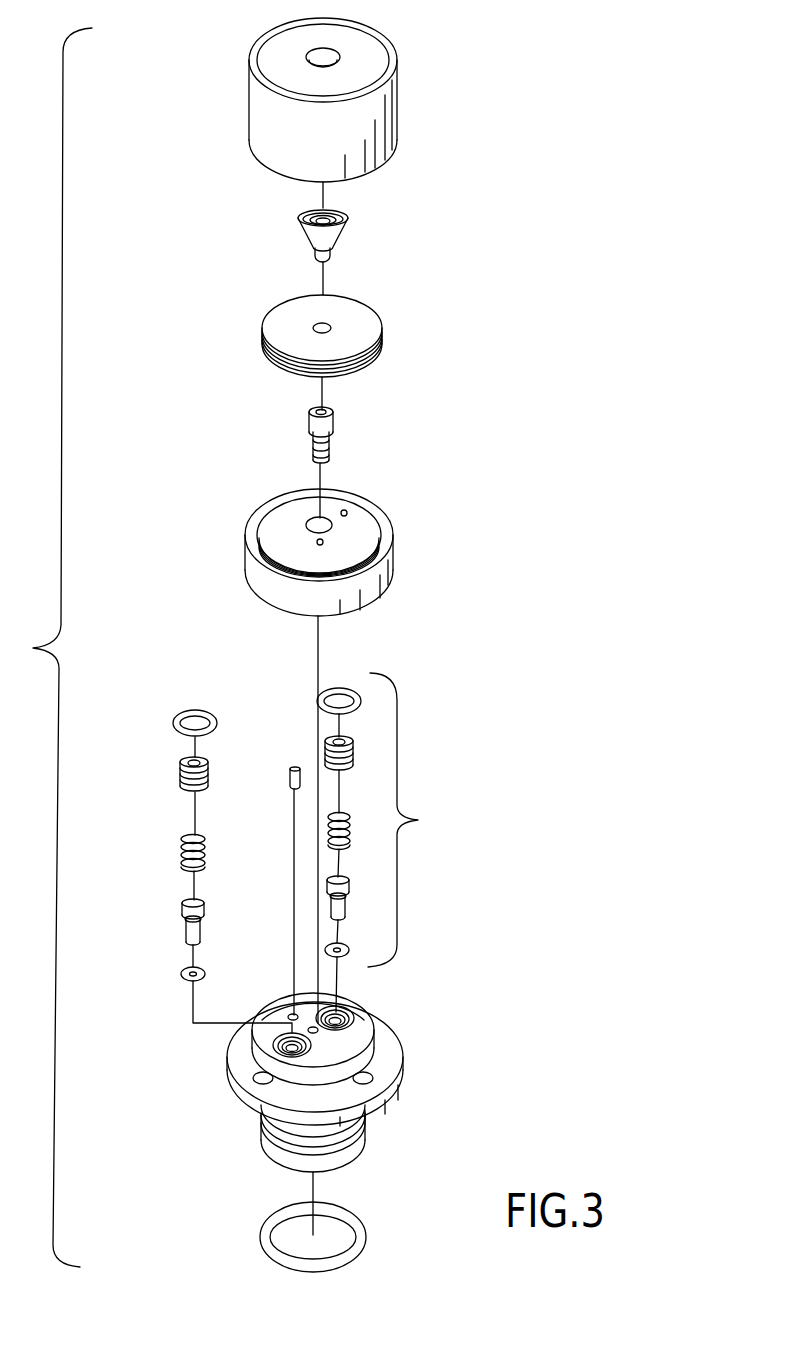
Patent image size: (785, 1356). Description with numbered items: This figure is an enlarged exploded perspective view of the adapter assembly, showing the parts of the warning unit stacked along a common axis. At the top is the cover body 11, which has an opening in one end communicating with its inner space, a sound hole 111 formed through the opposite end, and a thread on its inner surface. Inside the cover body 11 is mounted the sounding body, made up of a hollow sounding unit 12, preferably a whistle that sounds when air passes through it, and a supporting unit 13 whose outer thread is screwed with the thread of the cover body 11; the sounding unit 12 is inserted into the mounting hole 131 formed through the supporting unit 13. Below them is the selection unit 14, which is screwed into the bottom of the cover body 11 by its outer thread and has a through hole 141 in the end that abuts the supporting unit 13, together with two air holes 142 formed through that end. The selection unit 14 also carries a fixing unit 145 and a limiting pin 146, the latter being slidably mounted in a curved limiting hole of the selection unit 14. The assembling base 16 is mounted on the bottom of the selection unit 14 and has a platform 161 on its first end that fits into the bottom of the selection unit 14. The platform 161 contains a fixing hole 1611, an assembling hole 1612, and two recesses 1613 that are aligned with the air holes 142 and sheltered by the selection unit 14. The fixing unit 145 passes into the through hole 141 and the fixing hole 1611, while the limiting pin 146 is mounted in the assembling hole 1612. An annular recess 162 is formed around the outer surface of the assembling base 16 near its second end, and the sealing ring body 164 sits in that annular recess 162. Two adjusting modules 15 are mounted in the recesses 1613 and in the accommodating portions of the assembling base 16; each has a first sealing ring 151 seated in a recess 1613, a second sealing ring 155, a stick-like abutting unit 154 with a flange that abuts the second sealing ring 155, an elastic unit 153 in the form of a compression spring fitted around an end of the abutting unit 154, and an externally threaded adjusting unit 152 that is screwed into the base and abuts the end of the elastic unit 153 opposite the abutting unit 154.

The cover body 11 is at (268, 122).
The sound hole 111 is at (340, 55).
The sounding unit 12 is at (305, 226).
The supporting unit 13 is at (280, 327).
The mounting hole 131 is at (330, 325).
The selection unit 14 is at (248, 557).
The through hole 141 is at (325, 520).
The air holes 142 is at (350, 512).
The fixing unit 145 is at (312, 440).
The limiting pin 146 is at (290, 775).
The adjusting modules 15 is at (385, 842).
The first sealing ring 151 is at (175, 728).
The adjusting unit 152 is at (180, 775).
The elastic unit 153 is at (182, 843).
The abutting unit 154 is at (185, 923).
The second sealing ring 155 is at (180, 972).
The assembling base 16 is at (240, 1057).
The platform 161 is at (352, 1052).
The fixing hole 1611 is at (320, 1032).
The assembling hole 1612 is at (290, 1013).
The recesses 1613 is at (273, 1046).
The annular recess 162 is at (280, 1143).
The sealing ring body 164 is at (265, 1237).